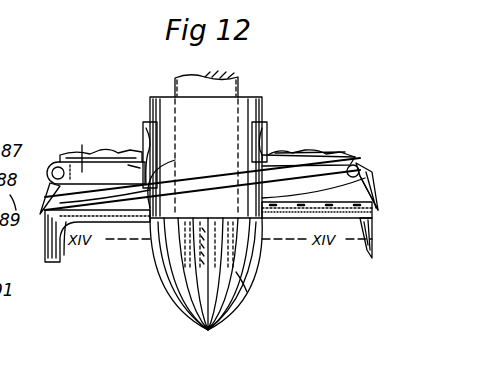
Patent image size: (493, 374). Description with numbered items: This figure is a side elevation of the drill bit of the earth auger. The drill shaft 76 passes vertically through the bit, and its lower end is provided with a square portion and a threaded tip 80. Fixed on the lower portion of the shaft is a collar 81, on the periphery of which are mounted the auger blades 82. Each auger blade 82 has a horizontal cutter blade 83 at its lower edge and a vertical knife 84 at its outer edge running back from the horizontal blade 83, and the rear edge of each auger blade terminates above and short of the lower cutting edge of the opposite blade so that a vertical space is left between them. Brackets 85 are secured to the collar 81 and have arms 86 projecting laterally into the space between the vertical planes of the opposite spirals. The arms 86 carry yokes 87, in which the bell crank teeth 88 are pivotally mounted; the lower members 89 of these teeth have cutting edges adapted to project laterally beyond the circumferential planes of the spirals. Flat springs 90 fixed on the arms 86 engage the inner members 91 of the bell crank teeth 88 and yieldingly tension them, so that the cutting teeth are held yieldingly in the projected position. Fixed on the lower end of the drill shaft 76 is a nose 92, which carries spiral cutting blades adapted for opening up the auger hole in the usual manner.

The drill shaft 76 is at (240, 84).
The threaded tip 80 is at (152, 282).
The collar 81 is at (262, 106).
The auger blade 82 is at (275, 168).
The horizontal cutter blade 83 is at (295, 214).
The vertical knife 84 is at (373, 238).
The bracket 85 is at (143, 125).
The arm 86 is at (127, 168).
The yoke 87 is at (108, 149).
The bell crank tooth 88 is at (56, 162).
The lower member 89 is at (47, 192).
The flat spring 90 is at (98, 158).
The inner member 91 is at (76, 158).
The nose 92 is at (250, 293).